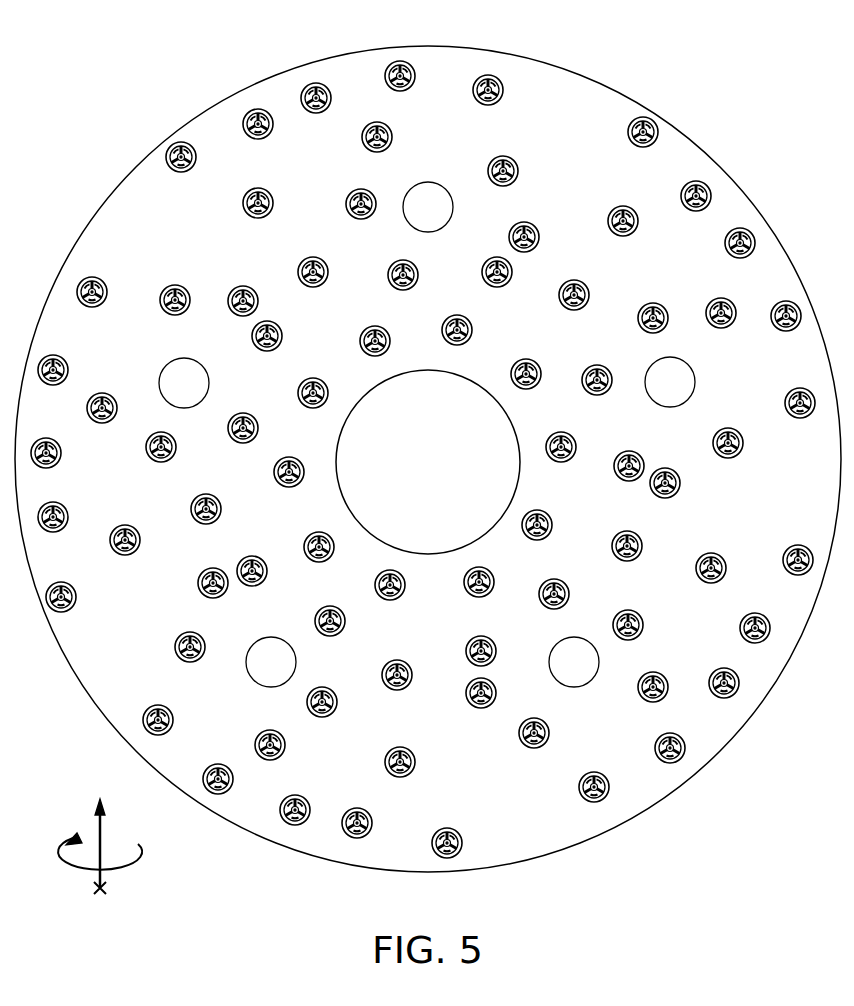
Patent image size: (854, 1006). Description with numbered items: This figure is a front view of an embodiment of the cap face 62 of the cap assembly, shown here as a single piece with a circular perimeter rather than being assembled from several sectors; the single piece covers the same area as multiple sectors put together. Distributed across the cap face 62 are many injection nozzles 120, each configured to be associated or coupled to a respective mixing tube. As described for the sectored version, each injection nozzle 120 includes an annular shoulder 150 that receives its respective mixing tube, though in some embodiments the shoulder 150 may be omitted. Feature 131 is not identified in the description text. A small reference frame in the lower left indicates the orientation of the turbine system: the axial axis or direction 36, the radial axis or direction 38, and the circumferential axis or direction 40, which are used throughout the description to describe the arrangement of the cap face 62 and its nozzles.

The cap face 62 is at (634, 102).
The injection nozzle 120 is at (181, 79).
The nozzle inner ring 131 is at (248, 115).
The shoulder 150 is at (181, 89).
The radial axis or direction 38 is at (102, 840).
The axial axis or direction 36 is at (106, 888).
The circumferential axis or direction 40 is at (77, 870).